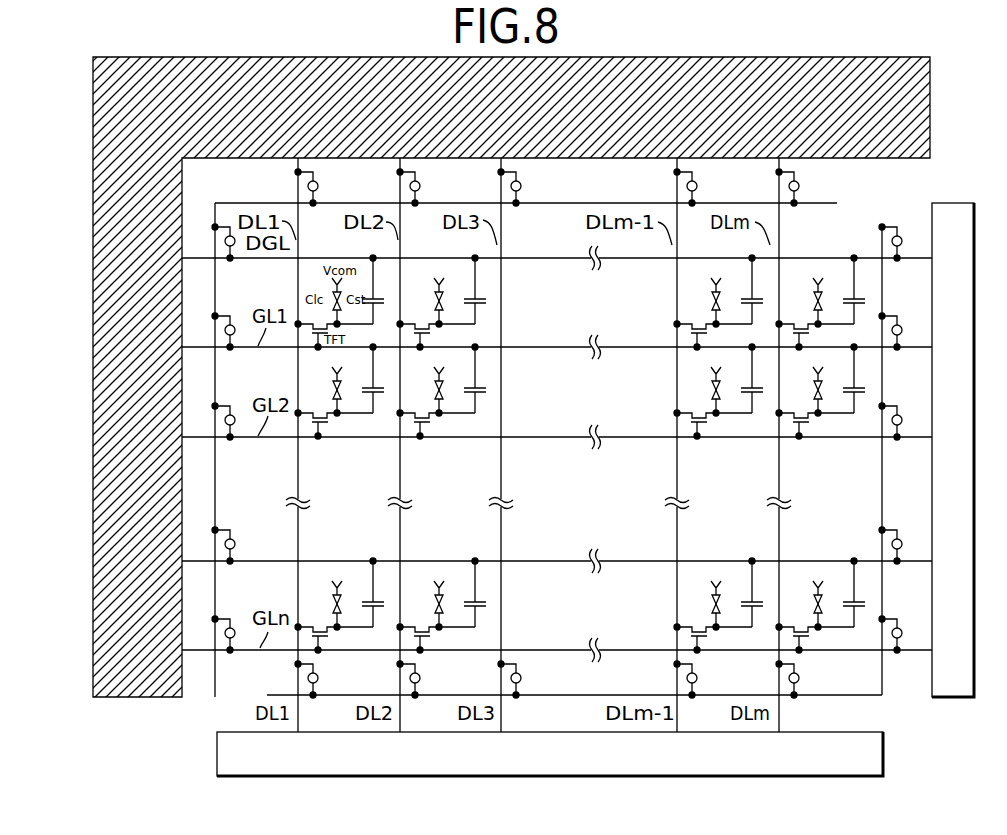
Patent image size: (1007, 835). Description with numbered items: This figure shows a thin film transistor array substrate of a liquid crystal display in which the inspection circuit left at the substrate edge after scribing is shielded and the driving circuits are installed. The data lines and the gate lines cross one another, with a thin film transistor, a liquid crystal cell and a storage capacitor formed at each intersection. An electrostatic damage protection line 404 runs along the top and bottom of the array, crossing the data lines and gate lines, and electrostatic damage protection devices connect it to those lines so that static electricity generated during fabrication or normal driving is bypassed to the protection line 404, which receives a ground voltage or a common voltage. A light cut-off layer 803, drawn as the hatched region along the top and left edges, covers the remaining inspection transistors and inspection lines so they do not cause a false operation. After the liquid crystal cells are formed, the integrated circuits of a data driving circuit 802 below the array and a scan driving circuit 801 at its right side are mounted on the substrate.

The scan driving circuit 801 is at (955, 200).
The data driving circuit 802 is at (883, 745).
The light cut-off layer 803 is at (93, 400).
The electrostatic damage protection line 404 is at (849, 212).